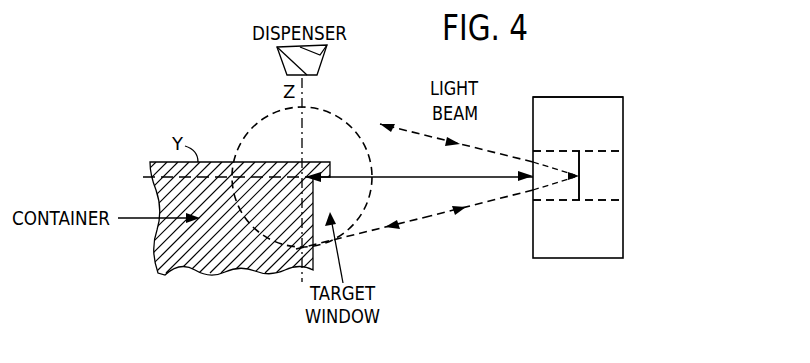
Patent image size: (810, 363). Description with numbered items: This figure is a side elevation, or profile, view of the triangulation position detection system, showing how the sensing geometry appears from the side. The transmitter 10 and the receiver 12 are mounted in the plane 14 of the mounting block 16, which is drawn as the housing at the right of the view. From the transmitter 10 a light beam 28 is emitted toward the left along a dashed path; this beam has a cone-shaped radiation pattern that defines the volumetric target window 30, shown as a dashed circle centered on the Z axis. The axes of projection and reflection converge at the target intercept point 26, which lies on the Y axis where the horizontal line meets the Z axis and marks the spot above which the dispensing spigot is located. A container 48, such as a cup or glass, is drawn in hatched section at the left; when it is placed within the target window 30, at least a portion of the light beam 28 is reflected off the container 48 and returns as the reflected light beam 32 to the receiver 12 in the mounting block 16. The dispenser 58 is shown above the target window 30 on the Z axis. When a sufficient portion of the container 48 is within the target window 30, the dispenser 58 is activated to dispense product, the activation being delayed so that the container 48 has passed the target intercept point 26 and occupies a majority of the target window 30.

The transmitter 10 is at (610, 178).
The receiver 12 is at (578, 175).
The plane 14 is at (533, 240).
The mounting block 16 is at (594, 88).
The target intercept point 26 is at (293, 172).
The light beam 28 is at (393, 227).
The target window 30 is at (288, 108).
The reflected light beam 32 is at (462, 211).
The container 48 is at (200, 270).
The dispenser 58 is at (321, 67).